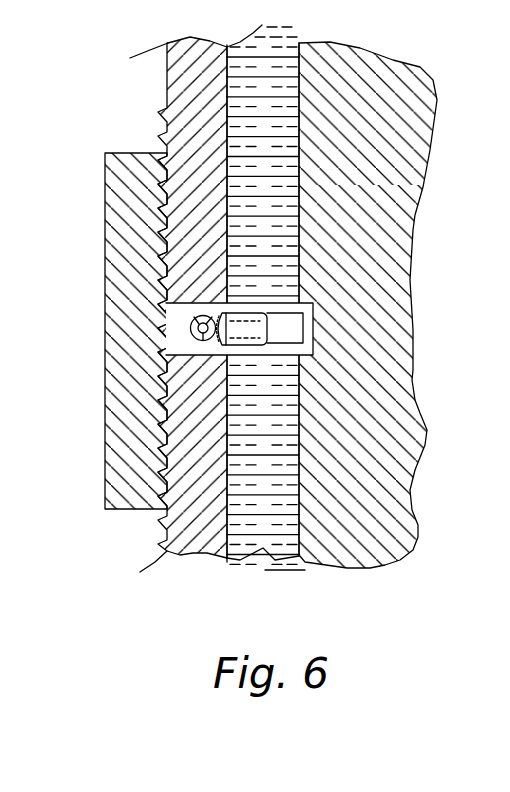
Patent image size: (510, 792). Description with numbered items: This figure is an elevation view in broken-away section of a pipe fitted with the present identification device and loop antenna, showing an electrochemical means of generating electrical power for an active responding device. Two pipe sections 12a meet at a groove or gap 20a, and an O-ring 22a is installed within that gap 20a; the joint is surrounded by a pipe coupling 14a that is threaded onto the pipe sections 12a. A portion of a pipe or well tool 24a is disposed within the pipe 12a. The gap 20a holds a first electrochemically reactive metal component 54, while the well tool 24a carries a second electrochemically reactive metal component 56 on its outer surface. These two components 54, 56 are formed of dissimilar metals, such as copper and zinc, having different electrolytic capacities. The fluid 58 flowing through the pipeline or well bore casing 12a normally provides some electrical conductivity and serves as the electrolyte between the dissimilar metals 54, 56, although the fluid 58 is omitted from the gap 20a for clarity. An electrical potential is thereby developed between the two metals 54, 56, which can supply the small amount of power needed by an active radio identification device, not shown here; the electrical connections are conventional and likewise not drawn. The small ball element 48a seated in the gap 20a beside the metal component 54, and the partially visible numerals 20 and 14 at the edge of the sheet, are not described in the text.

The pipe section 12a is at (141, 305).
The pipe coupling 14a is at (99, 331).
The gap 20a is at (172, 301).
The O-ring 22a is at (131, 349).
The well tool 24a is at (373, 333).
The ball 48a is at (126, 322).
The first electrochemically reactive metal component 54 is at (263, 313).
The second electrochemically reactive metal component 56 is at (366, 322).
The fluid 58 is at (261, 327).
The pocket (adjacent view, partial) 20 is at (501, 290).
The nut (adjacent view, partial) 14 is at (493, 460).